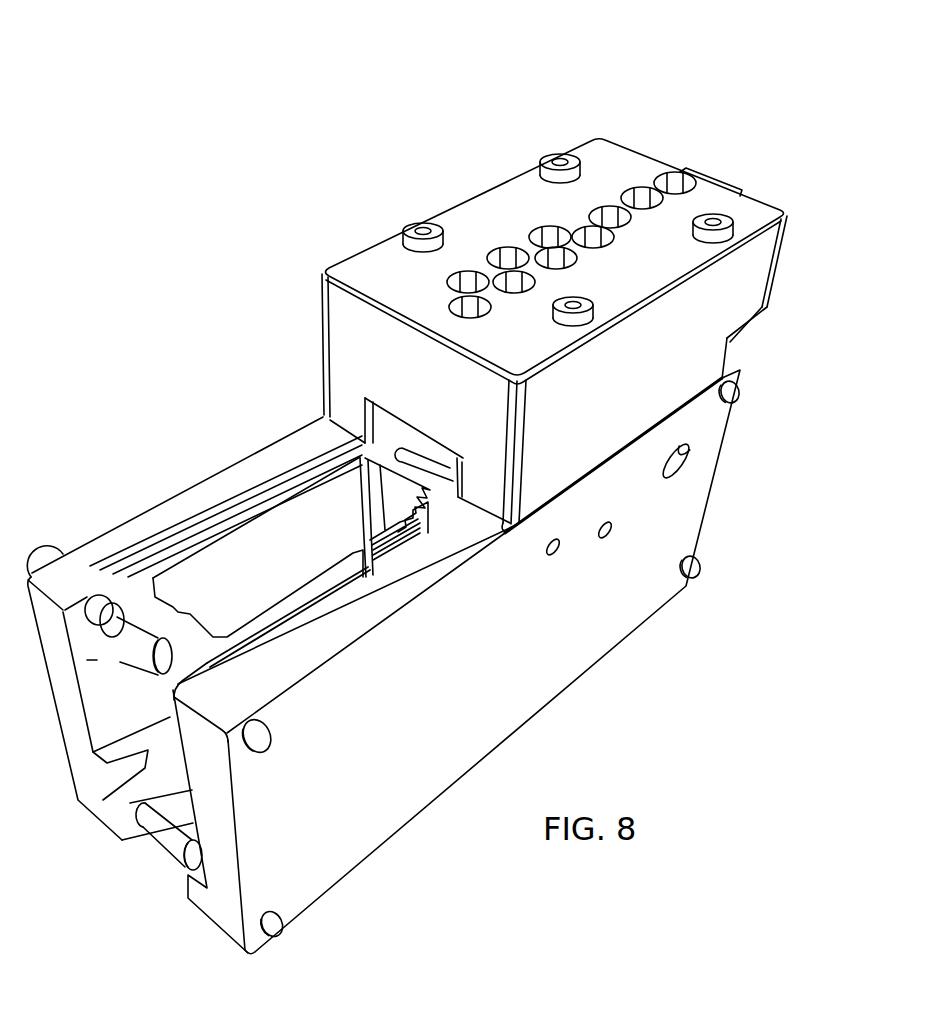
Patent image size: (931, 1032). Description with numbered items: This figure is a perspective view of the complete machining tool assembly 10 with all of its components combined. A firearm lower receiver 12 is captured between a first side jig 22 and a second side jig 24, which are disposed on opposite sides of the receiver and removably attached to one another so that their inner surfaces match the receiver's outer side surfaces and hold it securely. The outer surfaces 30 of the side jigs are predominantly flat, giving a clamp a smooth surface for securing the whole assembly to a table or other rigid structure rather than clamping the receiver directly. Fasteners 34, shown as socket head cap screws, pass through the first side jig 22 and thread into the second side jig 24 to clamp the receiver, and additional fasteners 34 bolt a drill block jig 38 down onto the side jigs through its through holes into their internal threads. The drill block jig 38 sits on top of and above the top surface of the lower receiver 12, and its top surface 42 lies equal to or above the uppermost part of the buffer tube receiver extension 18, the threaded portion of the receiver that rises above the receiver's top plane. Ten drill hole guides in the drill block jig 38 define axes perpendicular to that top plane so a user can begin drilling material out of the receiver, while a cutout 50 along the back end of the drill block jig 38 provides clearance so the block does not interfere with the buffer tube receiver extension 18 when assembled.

The machining tool assembly 10 is at (77, 72).
The firearm lower receiver 12 is at (291, 568).
The buffer tube receiver extension 18 is at (744, 156).
The first side jig 22 is at (268, 484).
The second side jig 24 is at (345, 738).
The outer surfaces 30 is at (484, 662).
The fasteners 34 is at (590, 250).
The drill block jig 38 is at (780, 297).
The top surface of the drill block jig 42 is at (553, 309).
The cutout 50 is at (771, 328).